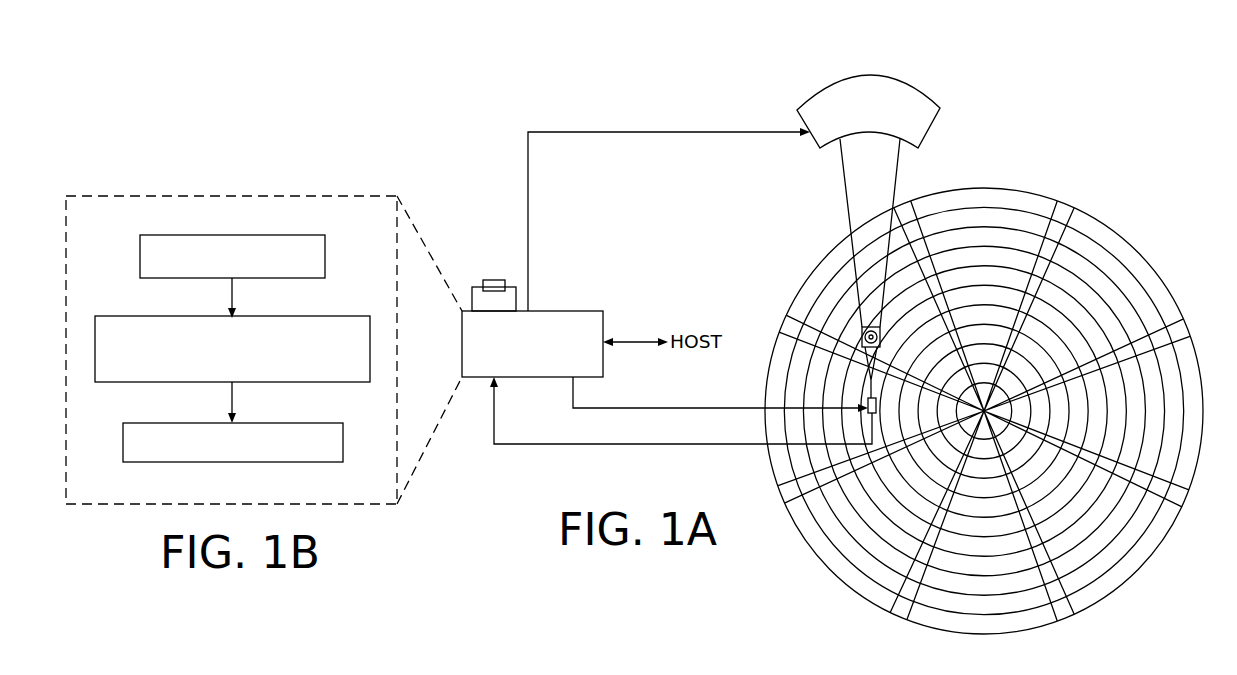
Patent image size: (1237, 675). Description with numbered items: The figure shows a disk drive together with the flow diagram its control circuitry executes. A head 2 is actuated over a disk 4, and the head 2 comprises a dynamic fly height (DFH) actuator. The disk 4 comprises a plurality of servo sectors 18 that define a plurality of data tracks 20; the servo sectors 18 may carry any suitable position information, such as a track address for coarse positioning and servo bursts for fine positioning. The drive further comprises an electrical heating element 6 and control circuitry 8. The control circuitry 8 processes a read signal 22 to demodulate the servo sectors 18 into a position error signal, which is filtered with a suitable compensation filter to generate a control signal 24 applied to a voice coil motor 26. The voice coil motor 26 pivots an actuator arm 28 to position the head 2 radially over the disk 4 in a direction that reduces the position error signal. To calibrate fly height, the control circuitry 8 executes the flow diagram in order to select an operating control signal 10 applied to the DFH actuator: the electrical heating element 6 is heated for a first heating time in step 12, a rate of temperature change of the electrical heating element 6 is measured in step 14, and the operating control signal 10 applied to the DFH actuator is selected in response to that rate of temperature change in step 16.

In FIG. 1A, the head 2 is at (884, 414).
In FIG. 1A, the disk 4 is at (1134, 238).
In FIG. 1A, the electrical heating element 6 is at (492, 280).
In FIG. 1A, the control circuitry 8 is at (570, 311).
In FIG. 1A, the operating control signal 10 is at (720, 408).
In FIG. 1B, the heating step 12 is at (273, 278).
In FIG. 1B, the measuring step 14 is at (318, 382).
In FIG. 1B, the selecting step 16 is at (305, 462).
In FIG. 1A, the servo sectors 18 is at (1066, 210).
In FIG. 1A, the data tracks 20 is at (980, 216).
In FIG. 1A, the read signal 22 is at (643, 444).
In FIG. 1A, the control signal 24 is at (528, 208).
In FIG. 1A, the voice coil motor (VCM) 26 is at (817, 145).
In FIG. 1A, the actuator arm 28 is at (854, 221).